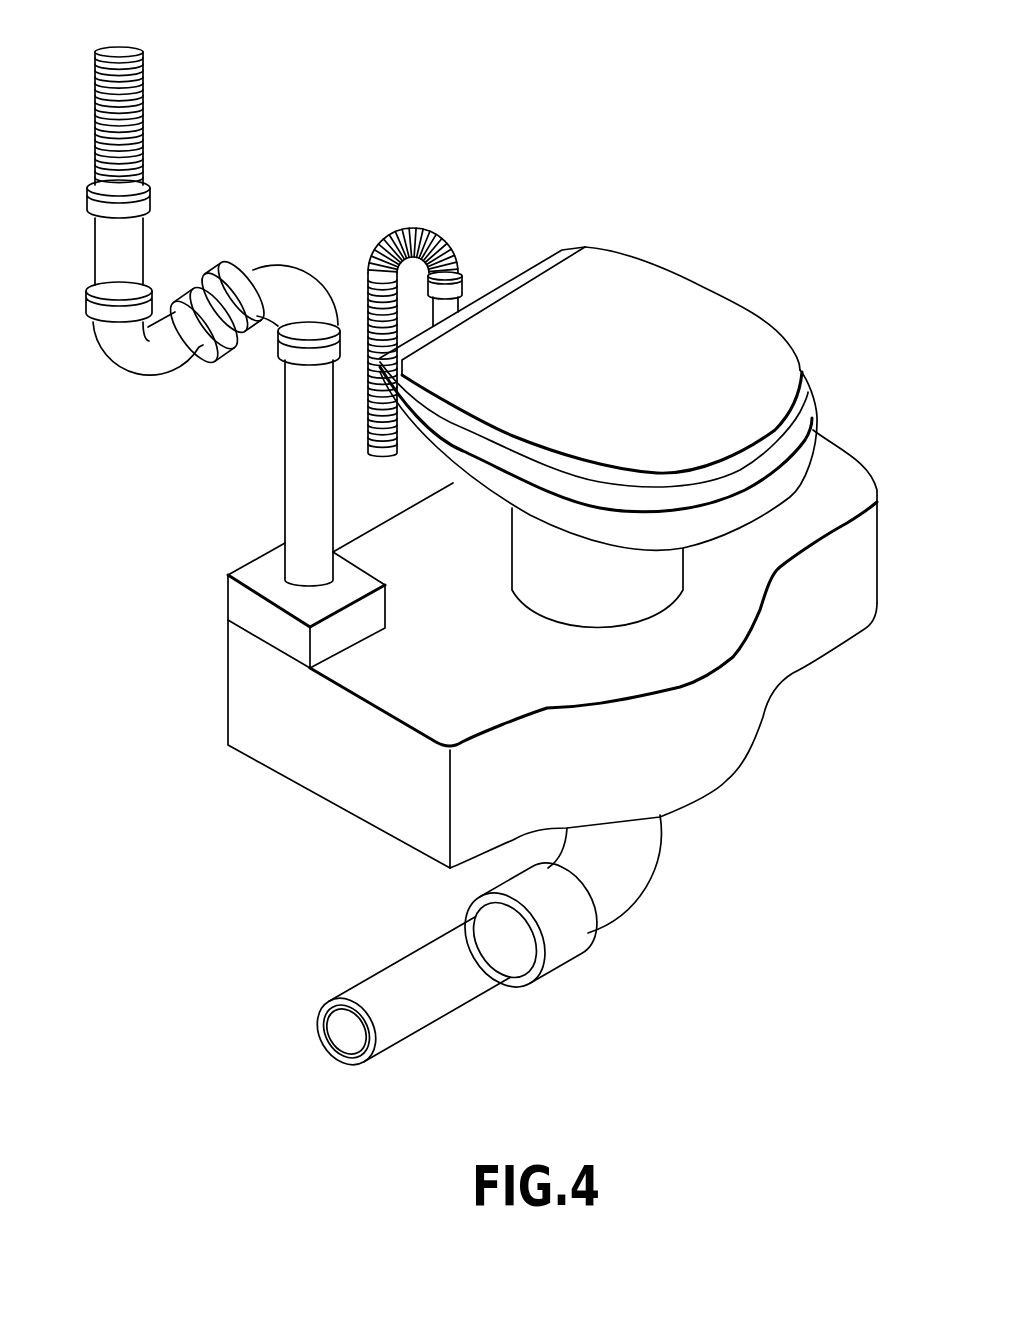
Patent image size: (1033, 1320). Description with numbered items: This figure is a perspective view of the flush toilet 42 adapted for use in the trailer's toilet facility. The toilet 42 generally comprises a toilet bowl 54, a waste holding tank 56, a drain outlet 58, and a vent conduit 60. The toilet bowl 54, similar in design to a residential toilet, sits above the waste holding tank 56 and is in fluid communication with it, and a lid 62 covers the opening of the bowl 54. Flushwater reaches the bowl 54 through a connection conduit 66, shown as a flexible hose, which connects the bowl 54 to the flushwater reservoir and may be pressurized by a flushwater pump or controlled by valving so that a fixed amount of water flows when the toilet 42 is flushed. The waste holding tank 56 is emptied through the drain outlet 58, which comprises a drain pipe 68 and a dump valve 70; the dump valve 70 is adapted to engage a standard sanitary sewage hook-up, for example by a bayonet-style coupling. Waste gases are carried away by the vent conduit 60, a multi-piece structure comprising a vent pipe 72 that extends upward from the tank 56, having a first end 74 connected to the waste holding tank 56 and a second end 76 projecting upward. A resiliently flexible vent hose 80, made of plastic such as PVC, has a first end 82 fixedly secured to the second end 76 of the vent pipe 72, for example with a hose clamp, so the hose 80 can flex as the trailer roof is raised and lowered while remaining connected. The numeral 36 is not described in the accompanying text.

The water supply line assembly 36 is at (217, 450).
The flush toilet 42 is at (463, 133).
The toilet bowl 54 is at (802, 468).
The waste holding tank 56 is at (860, 632).
The drain outlet 58 is at (452, 1040).
The vent conduit 60 is at (117, 393).
The lid 62 is at (698, 292).
The connection conduit 66 is at (430, 230).
The drain pipe 68 is at (423, 963).
The dump valve 70 is at (347, 1040).
The vent pipe 72 is at (293, 405).
The first end 74 is at (277, 552).
The second end 76 is at (148, 182).
The vent hose 80 is at (146, 134).
The first end 82 is at (93, 178).